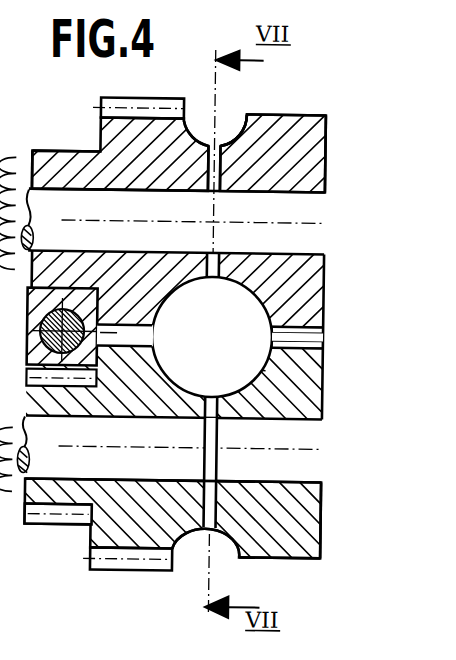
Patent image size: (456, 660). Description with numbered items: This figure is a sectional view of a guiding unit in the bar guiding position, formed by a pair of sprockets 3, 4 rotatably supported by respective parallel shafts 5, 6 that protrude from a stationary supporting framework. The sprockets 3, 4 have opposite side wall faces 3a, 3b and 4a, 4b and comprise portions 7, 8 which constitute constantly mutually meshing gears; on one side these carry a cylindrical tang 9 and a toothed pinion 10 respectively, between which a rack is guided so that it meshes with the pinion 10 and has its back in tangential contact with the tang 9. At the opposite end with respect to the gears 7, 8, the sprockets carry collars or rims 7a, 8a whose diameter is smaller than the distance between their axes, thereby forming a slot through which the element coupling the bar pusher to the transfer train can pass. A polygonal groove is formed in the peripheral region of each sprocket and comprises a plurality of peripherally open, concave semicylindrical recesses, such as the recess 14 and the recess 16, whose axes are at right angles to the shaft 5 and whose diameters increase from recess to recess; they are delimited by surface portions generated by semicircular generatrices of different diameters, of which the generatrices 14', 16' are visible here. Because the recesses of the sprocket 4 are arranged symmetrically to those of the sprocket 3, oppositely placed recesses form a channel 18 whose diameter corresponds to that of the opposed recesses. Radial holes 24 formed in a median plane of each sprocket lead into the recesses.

The sprocket 3 is at (331, 141).
The side wall face 3a is at (324, 171).
The side wall face 3b is at (29, 170).
The sprocket 4 is at (330, 531).
The side wall face 4a is at (322, 501).
The side wall face 4b is at (25, 505).
The shaft 5 is at (304, 210).
The shaft 6 is at (304, 437).
The gear portion 7 is at (134, 99).
The collar 7a is at (293, 114).
The gear portion 8 is at (127, 565).
The collar 8a is at (305, 559).
The cylindrical tang 9 is at (60, 152).
The toothed pinion 10 is at (64, 520).
The recess 14 is at (241, 338).
The generatrix 14' is at (301, 79).
The recess 16 is at (243, 320).
The generatrix 16' is at (352, 322).
The channel 18 is at (217, 360).
The radial hole 24 is at (209, 146).